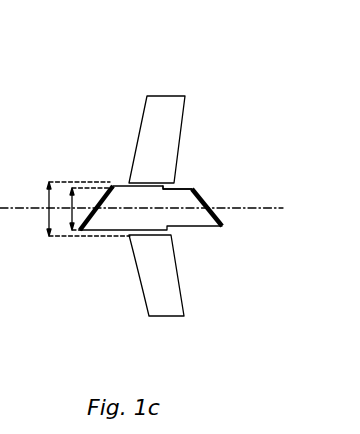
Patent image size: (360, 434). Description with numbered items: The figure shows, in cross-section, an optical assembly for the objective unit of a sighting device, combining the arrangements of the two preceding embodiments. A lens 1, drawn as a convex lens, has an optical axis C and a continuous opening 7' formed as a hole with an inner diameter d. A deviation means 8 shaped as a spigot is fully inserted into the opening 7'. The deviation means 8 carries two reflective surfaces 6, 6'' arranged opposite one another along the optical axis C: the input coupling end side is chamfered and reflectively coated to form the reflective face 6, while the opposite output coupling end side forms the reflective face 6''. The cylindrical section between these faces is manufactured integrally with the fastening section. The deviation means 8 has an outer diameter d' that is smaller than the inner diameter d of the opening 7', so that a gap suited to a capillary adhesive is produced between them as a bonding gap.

The lens 1 is at (163, 113).
The reflective face 6 is at (87, 129).
The reflective face 6'' is at (250, 126).
The continuous opening 7' is at (211, 134).
The deviation means 8 is at (130, 214).
The diameter d is at (69, 271).
The outer diameter d' is at (79, 264).
The optical axis C is at (273, 210).